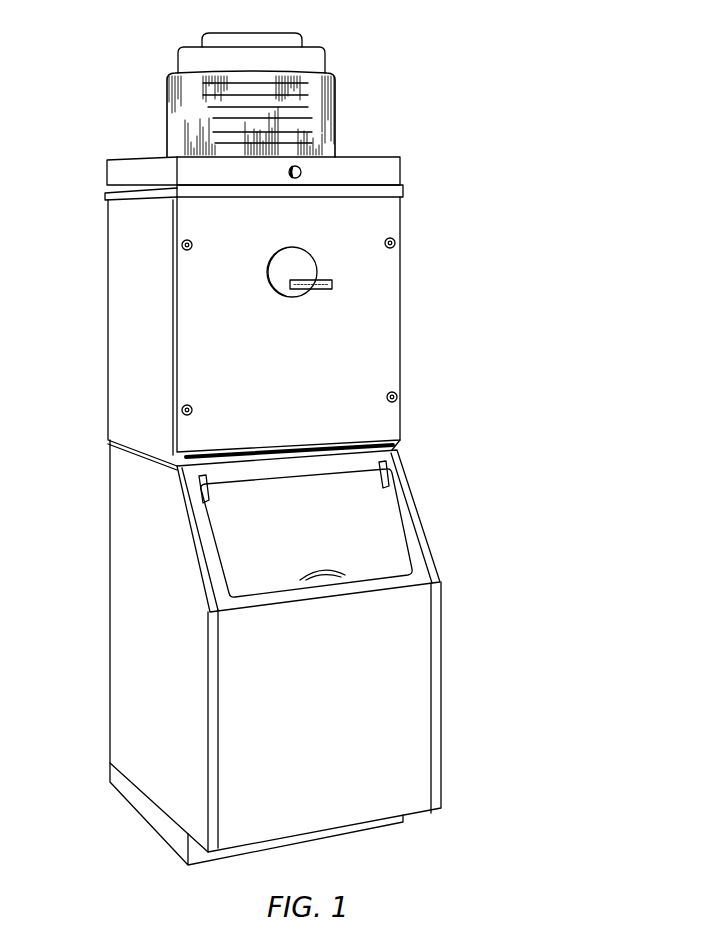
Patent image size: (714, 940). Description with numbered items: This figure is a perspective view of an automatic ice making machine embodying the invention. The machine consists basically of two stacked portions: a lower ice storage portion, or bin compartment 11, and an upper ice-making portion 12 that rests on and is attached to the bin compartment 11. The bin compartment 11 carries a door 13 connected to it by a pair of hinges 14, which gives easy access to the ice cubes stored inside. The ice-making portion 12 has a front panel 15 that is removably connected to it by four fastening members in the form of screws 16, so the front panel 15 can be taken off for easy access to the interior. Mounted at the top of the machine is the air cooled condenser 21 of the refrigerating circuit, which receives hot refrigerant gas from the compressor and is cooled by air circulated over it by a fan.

The bin compartment 11 is at (138, 606).
The ice-making portion 12 is at (142, 293).
The door 13 is at (382, 537).
The hinges 14 is at (198, 484).
The front panel 15 is at (380, 297).
The screws 16 is at (398, 396).
The condenser 21 is at (340, 108).